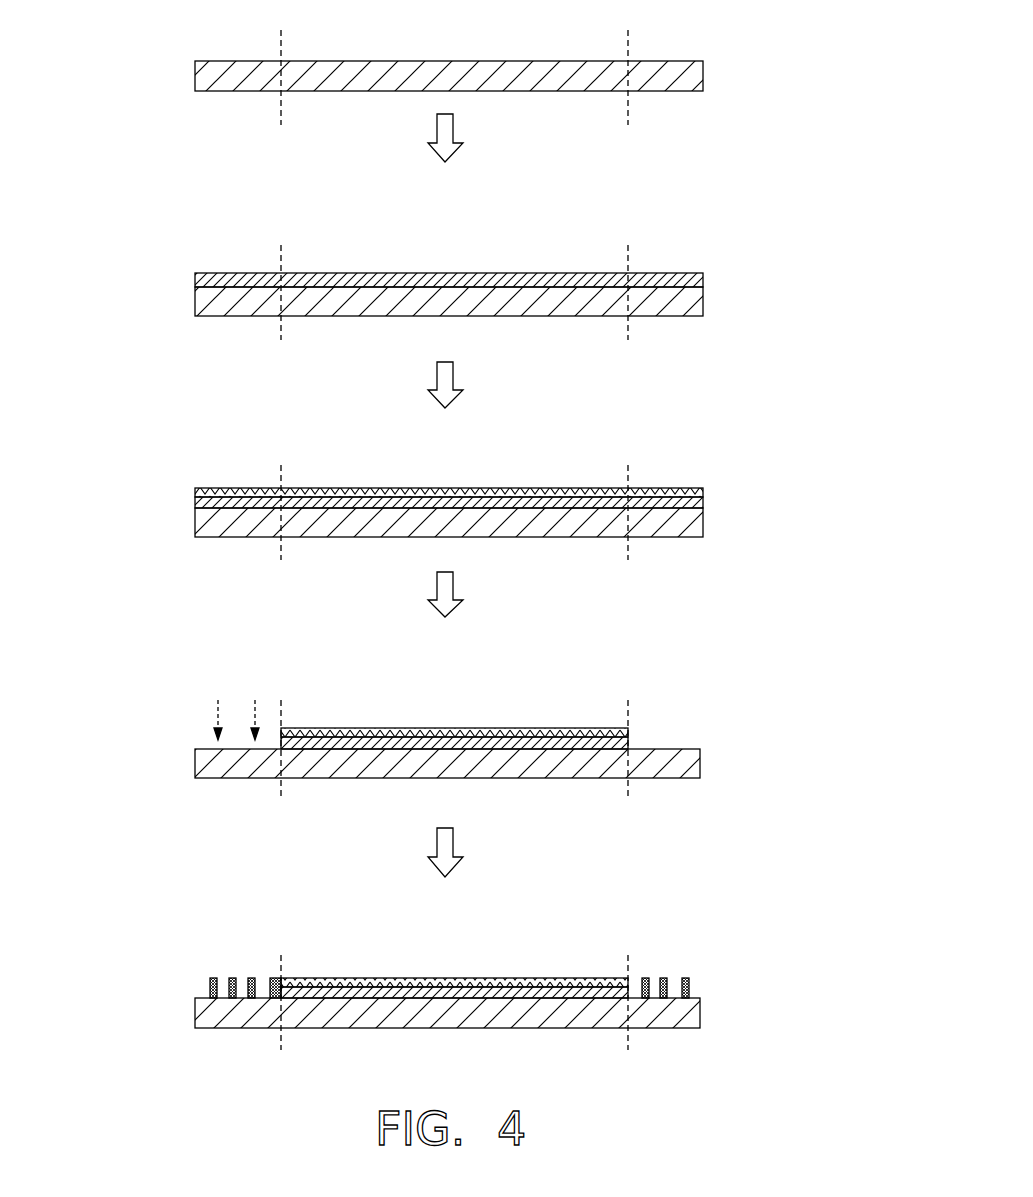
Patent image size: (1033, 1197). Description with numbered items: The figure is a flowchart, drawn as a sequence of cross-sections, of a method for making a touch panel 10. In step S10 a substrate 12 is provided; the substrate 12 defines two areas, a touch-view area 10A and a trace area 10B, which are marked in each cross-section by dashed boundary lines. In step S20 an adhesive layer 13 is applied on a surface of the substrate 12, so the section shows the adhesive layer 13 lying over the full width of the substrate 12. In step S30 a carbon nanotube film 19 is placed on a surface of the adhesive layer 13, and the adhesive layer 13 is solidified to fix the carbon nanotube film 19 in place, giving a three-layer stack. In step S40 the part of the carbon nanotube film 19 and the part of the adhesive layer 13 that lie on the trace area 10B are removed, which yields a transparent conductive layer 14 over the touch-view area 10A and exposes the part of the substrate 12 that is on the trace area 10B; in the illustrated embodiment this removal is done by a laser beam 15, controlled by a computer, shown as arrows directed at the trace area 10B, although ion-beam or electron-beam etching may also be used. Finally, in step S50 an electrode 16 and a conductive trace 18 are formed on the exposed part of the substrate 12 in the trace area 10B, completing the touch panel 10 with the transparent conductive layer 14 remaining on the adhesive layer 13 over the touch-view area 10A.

The touch panel 10 is at (352, 928).
The touch-view area 10A is at (383, 531).
The trace area 10B is at (670, 533).
The substrate 12 is at (703, 75).
The adhesive layer 13 is at (703, 273).
The transparent conductive layer 14 is at (492, 733).
The laser beam 15 is at (218, 705).
The electrode 16 is at (270, 988).
The conductive trace 18 is at (208, 978).
The carbon nanotube film 19 is at (700, 489).
The step of providing a substrate S10 is at (180, 75).
The step of applying an adhesive layer S20 is at (180, 300).
The step of placing a carbon nanotube film S30 is at (180, 521).
The step of removing part of the carbon nanotube film and adhesive layer S40 is at (180, 763).
The step of forming an electrode and a conductive trace S50 is at (180, 1011).